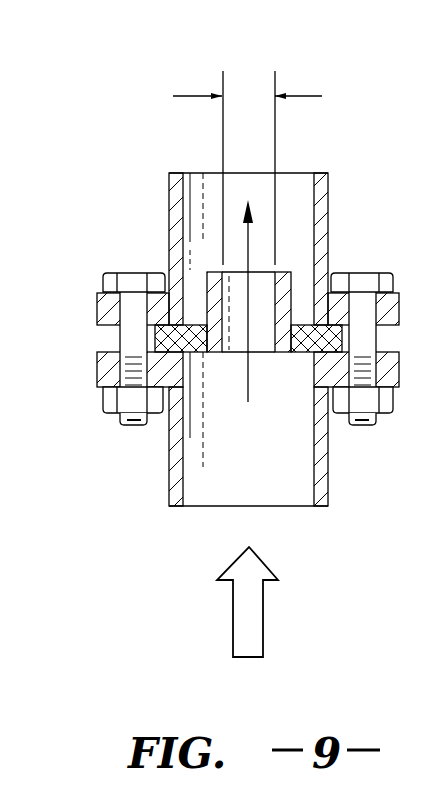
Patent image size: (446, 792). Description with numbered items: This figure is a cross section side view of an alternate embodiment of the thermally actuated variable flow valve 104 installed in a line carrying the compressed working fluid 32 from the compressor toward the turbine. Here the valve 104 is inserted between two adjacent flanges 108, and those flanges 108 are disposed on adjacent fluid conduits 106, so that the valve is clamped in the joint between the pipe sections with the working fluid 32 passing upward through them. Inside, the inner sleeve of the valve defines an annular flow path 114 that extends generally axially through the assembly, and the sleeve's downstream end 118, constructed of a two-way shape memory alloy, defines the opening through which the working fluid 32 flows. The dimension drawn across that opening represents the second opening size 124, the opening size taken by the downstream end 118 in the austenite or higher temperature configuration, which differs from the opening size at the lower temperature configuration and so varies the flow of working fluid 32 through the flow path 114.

The working fluid 32 is at (253, 618).
The variable flow valve 104 is at (150, 336).
The fluid conduit 106 is at (328, 185).
The flange 108 is at (97, 310).
The annular flow path 114 is at (250, 240).
The downstream end 118 is at (283, 266).
The second opening size 124 is at (247, 93).